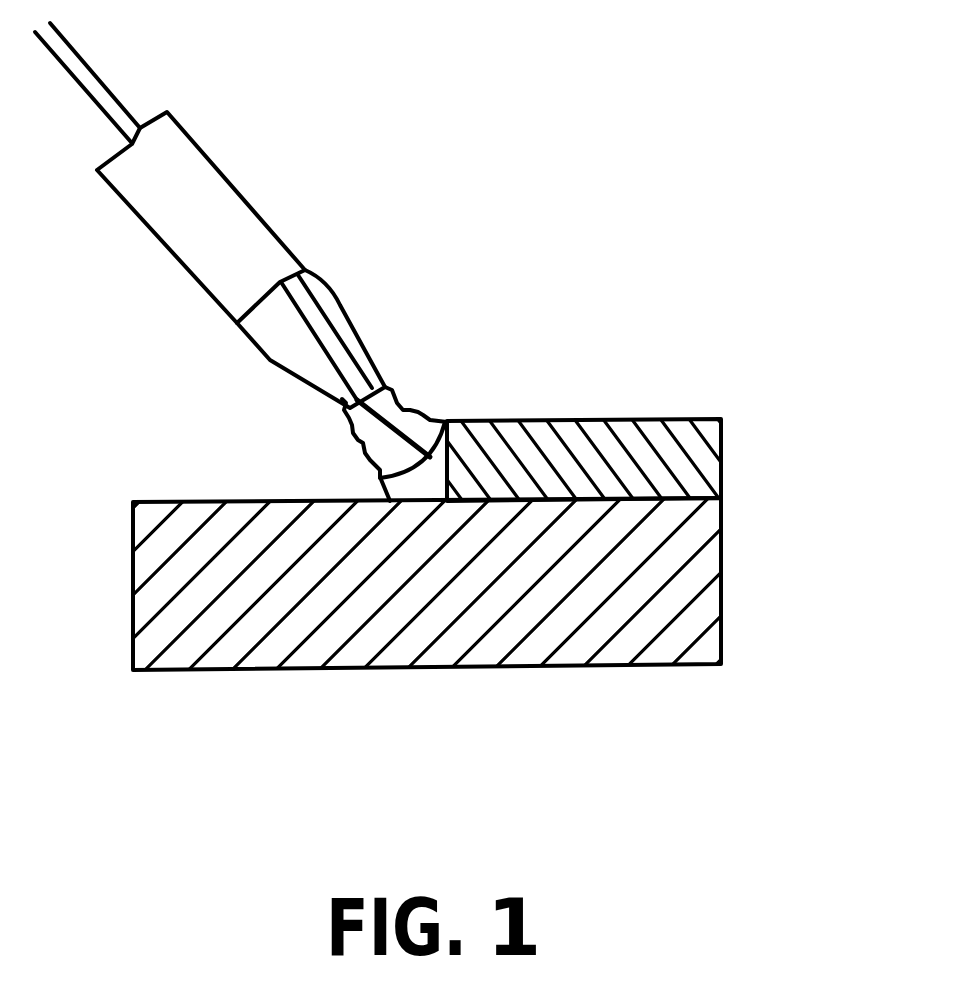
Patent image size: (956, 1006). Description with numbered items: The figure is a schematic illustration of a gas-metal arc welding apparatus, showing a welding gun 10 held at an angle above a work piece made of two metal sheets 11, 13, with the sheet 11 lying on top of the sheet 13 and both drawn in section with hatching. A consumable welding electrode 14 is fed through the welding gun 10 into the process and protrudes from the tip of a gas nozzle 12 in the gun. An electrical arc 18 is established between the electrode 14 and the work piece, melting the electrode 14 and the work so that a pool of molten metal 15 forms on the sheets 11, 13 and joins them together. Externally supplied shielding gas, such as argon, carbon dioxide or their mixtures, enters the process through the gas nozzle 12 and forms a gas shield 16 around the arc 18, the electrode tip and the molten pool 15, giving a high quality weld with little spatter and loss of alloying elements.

The welding gun 10 is at (120, 198).
The metal sheet 11 is at (721, 463).
The gas nozzle 12 is at (310, 305).
The metal sheet 13 is at (721, 618).
The consumable welding electrode 14 is at (400, 400).
The pool of molten metal 15 is at (437, 487).
The gas shield 16 is at (353, 430).
The electrical arc 18 is at (380, 477).